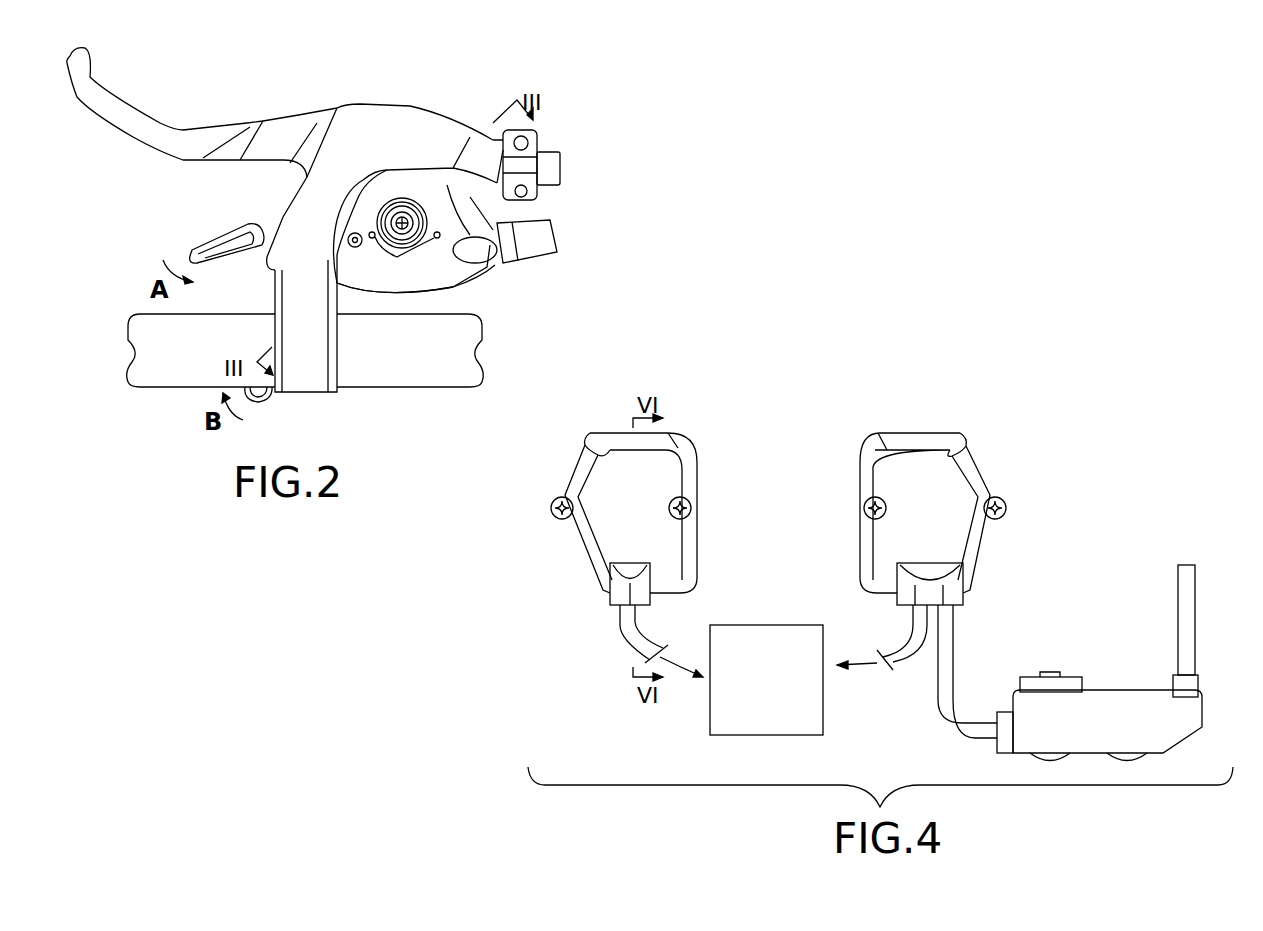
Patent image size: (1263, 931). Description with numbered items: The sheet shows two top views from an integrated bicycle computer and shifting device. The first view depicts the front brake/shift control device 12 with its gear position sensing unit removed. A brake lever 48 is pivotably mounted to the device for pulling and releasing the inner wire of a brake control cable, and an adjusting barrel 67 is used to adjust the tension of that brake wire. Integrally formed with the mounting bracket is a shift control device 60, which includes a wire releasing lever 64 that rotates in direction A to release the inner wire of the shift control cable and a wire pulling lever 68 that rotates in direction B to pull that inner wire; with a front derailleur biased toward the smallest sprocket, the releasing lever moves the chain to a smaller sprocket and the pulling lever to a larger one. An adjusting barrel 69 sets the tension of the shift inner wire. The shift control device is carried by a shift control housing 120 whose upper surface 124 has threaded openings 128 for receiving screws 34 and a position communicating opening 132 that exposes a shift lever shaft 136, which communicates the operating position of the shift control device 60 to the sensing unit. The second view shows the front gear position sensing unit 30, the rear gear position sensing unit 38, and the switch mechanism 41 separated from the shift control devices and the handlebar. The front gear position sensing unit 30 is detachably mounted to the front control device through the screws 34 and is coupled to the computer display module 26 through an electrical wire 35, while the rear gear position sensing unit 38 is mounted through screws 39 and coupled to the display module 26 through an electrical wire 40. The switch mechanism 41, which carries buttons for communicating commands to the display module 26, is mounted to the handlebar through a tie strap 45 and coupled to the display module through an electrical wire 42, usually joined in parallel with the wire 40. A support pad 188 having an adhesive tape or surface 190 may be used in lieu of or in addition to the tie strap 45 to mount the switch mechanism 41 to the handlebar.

In FIG. 2, the front brake/shift control device 12 is at (270, 103).
In FIG. 2, the brake lever 48 is at (108, 102).
In FIG. 2, the shift control device 60 is at (343, 283).
In FIG. 2, the wire releasing lever 64 is at (190, 242).
In FIG. 2, the wire pulling lever 68 is at (260, 402).
In FIG. 2, the adjusting barrel 67 is at (530, 197).
In FIG. 2, the adjusting barrel 69 is at (530, 263).
In FIG. 2, the shift control housing 120 is at (460, 283).
In FIG. 2, the upper surface 124 is at (432, 278).
In FIG. 2, the threaded openings 128 is at (398, 250).
In FIG. 2, the position communicating opening 132 is at (388, 207).
In FIG. 2, the shift lever shaft 136 is at (420, 213).
In FIG. 4, the computer display module 26 is at (773, 625).
In FIG. 4, the front gear position sensing unit 30 is at (624, 505).
In FIG. 4, the screws 34 is at (555, 513).
In FIG. 4, the electrical wire 35 is at (627, 640).
In FIG. 4, the rear gear position sensing unit 38 is at (933, 492).
In FIG. 4, the screws 39 is at (862, 508).
In FIG. 4, the electrical wire 40 is at (905, 642).
In FIG. 4, the switch mechanism 41 is at (1116, 708).
In FIG. 4, the electrical wire 42 is at (940, 725).
In FIG. 4, the tie strap 45 is at (1197, 627).
In FIG. 4, the support pad 188 is at (1023, 685).
In FIG. 4, the adhesive tape or surface 190 is at (1047, 675).